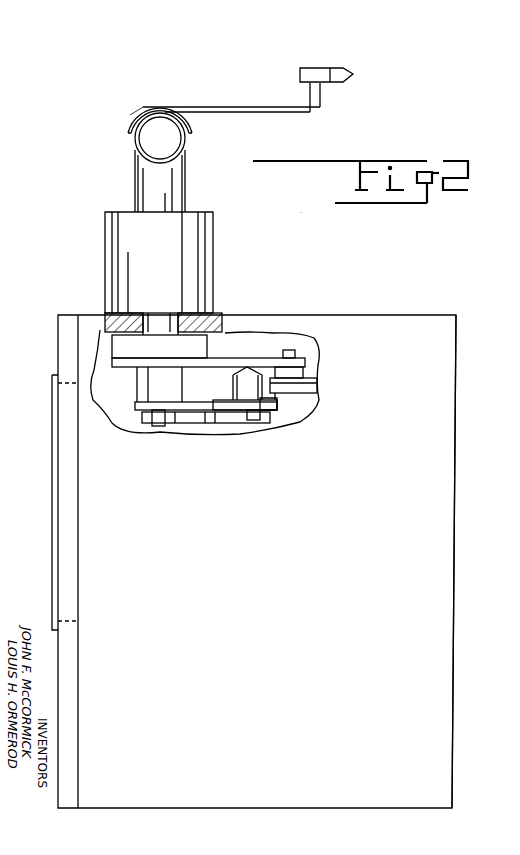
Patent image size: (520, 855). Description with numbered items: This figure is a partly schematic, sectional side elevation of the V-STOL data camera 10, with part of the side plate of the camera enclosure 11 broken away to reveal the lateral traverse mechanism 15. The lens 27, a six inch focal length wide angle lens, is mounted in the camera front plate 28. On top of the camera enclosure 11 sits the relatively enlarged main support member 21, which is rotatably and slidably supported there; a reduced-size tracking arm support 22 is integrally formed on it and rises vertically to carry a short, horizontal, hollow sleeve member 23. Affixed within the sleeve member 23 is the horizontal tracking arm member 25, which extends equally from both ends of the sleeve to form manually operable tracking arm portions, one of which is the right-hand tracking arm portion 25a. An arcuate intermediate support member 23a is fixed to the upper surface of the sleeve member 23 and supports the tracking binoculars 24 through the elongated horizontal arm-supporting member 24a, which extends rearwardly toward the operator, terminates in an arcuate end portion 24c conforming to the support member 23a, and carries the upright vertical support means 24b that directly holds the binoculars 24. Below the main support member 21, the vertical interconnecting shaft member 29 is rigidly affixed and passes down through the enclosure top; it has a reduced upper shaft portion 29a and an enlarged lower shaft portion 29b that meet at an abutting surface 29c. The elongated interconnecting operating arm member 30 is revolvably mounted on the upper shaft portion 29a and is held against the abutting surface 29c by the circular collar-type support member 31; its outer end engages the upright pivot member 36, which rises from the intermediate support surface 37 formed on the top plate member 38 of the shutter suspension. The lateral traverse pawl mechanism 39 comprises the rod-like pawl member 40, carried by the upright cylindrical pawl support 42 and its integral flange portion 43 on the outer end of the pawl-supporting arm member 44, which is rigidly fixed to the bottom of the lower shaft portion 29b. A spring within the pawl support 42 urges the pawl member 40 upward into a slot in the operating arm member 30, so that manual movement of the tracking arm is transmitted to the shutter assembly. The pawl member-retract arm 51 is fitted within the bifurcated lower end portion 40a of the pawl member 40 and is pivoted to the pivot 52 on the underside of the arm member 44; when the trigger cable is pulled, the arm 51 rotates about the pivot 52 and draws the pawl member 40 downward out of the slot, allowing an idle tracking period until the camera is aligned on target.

The V-STOL data camera 10 is at (462, 568).
The camera enclosure 11 is at (459, 419).
The lateral traverse mechanism 15 is at (108, 197).
The main support member 21 is at (107, 257).
The tracking arm support 22 is at (185, 182).
The supporting hollow sleeve member 23 is at (182, 158).
The intermediate support member 23a is at (190, 127).
The tracking binoculars 24 is at (327, 69).
The main tracking binocular arm-supporting member 24a is at (228, 106).
The upright vertical support means 24b is at (320, 94).
The arcuate-shaped end portion 24c is at (147, 106).
The main shaft-type tracking arm member 25 is at (126, 139).
The right-hand tracking arm portion 25a is at (148, 143).
The lens 27 is at (50, 496).
The camera front plate 28 is at (76, 715).
The interconnecting shaft-type member 29 is at (165, 318).
The upper shaft portion 29a is at (160, 317).
The lower shaft portion 29b is at (148, 406).
The abutting surface 29c is at (148, 371).
The interconnecting operating arm member 30 is at (283, 344).
The collar-type support member 31 is at (208, 351).
The upright pivot member 36 is at (297, 352).
The intermediate support surface 37 is at (295, 373).
The top plate member 38 is at (318, 383).
The lateral traverse pawl mechanism 39 is at (227, 389).
The lateral traverse pawl member 40 is at (245, 370).
The bifurcated lower end portion 40a is at (250, 418).
The upright cylindrical pawl support 42 is at (265, 412).
The integral flange portion 43 is at (210, 410).
The pawl-supporting arm member 44 is at (178, 424).
The pawl member-retract arm 51 is at (185, 412).
The pivot 52 is at (156, 424).